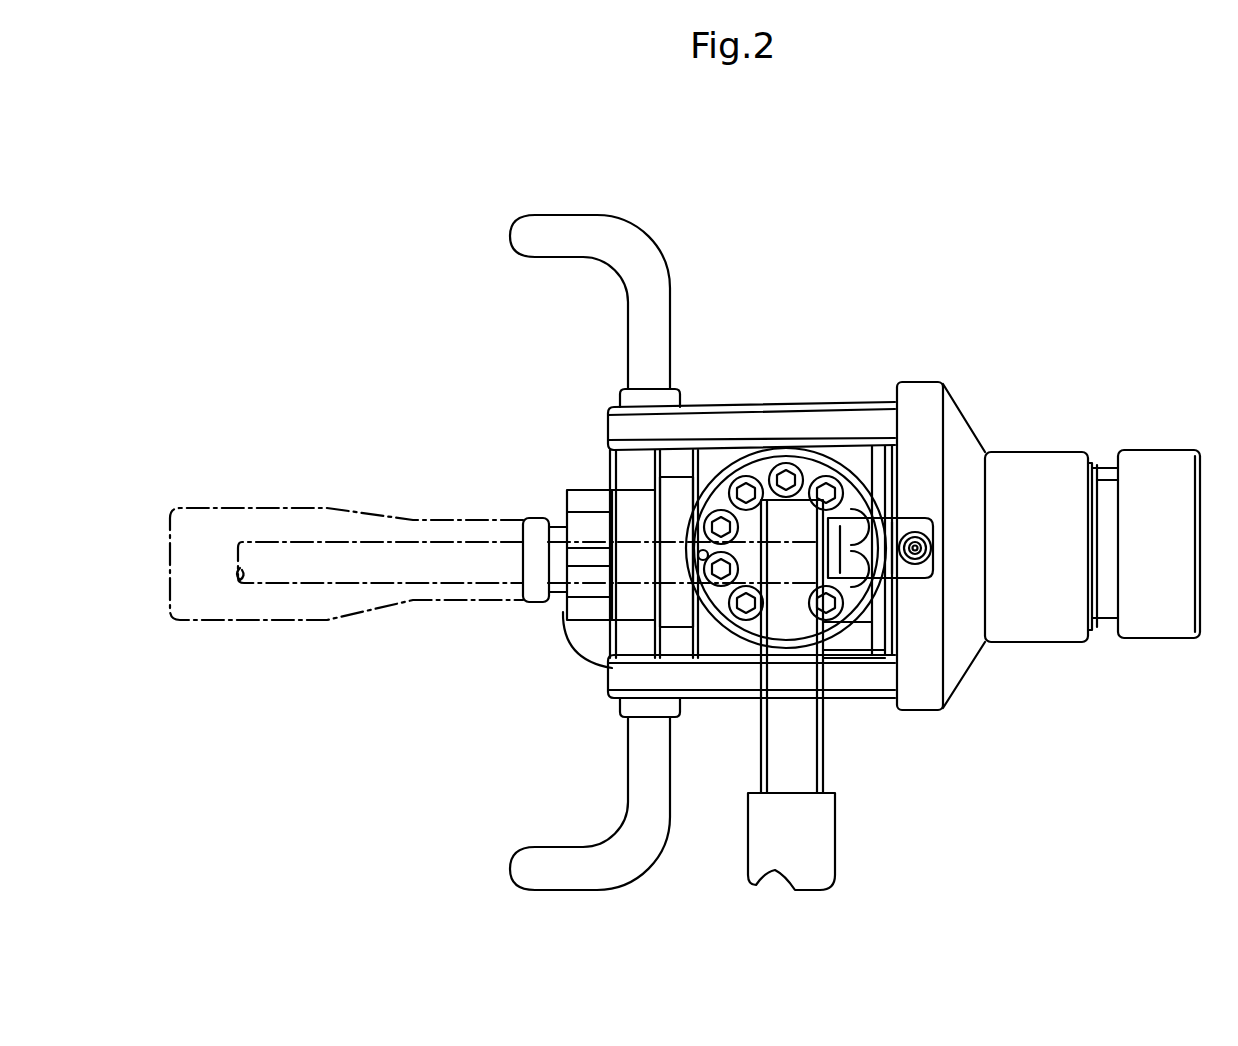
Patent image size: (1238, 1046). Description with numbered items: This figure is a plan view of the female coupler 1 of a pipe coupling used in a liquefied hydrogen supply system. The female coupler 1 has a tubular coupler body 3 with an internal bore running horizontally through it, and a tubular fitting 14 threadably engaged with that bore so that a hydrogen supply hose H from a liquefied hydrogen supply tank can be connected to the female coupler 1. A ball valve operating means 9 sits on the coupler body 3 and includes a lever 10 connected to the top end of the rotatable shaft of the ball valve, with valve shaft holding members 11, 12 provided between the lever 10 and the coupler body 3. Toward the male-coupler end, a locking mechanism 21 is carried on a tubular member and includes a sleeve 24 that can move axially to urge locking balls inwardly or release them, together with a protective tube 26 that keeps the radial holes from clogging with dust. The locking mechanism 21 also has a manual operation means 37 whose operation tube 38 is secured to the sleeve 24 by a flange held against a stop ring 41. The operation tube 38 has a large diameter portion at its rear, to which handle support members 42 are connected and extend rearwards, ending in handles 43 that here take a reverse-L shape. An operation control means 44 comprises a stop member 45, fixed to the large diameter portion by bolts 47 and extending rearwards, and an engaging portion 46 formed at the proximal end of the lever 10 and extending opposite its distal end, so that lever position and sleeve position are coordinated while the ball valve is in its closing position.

The female coupler 1 is at (862, 392).
The tubular coupler body 3 is at (677, 493).
The ball valve operating means 9 is at (835, 758).
The lever 10 is at (802, 777).
The valve shaft holding member 11 is at (847, 648).
The valve shaft holding member 12 is at (862, 615).
The tubular fitting 14 is at (588, 512).
The locking mechanism 21 is at (1088, 445).
The sleeve 24 is at (1102, 472).
The protective tube 26 is at (1170, 465).
The manual operation means 37 is at (973, 422).
The operation tube 38 is at (1015, 465).
The stop ring 41 is at (1090, 498).
The handle support member 42 is at (803, 420).
The handle 43 is at (643, 345).
The operation control means 44 is at (826, 488).
The stop member 45 is at (865, 540).
The engaging portion 46 is at (773, 470).
The bolt 47 is at (933, 553).
The hydrogen supply hose H is at (395, 545).